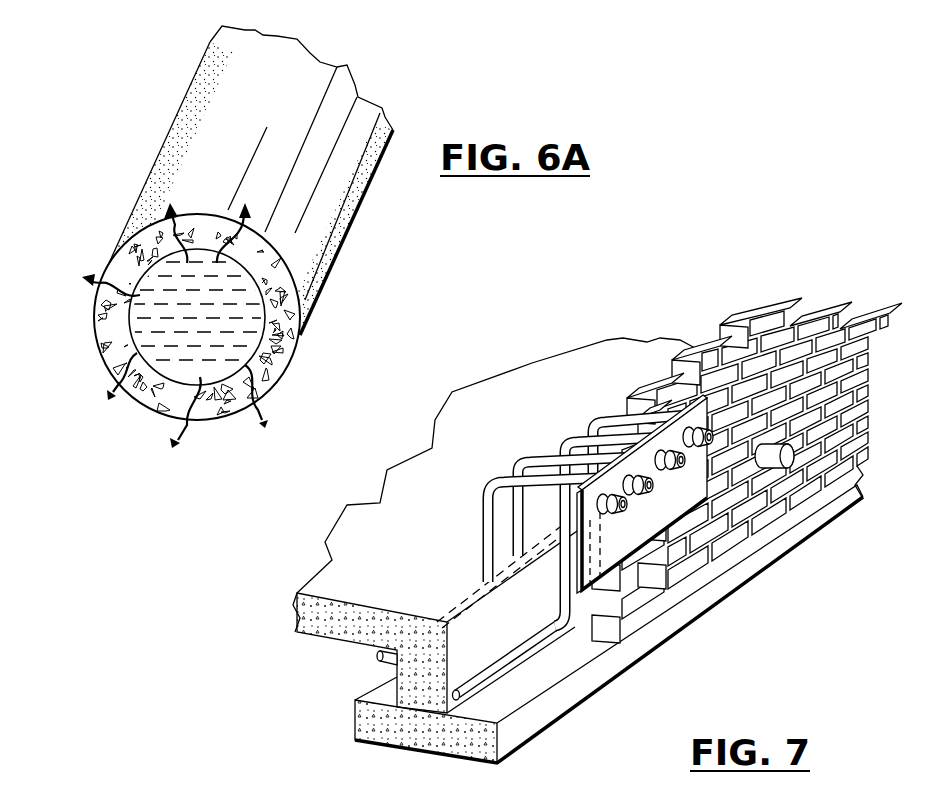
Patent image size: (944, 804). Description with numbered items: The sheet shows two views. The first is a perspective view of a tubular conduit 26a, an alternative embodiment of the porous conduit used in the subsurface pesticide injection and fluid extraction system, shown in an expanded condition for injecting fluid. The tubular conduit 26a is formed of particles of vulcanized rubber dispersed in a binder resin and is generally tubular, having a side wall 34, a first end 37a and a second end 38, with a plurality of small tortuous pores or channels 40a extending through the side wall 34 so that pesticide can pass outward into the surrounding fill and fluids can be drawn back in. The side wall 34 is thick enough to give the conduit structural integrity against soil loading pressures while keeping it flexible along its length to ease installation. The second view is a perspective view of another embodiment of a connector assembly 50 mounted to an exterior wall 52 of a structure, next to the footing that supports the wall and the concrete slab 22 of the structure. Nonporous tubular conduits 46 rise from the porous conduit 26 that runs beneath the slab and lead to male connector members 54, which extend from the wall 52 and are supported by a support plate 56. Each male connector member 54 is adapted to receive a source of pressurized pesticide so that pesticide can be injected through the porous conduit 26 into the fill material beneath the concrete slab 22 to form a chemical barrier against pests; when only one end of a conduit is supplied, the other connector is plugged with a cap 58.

In FIG. 7, the concrete slab 22 is at (362, 548).
In FIG. 7, the porous tubular conduit 26 is at (482, 690).
In FIG. 6A, the tubular conduit 26a is at (158, 152).
In FIG. 6A, the side wall 34 is at (340, 192).
In FIG. 6A, the first end 37a is at (92, 333).
In FIG. 6A, the second end 38 is at (216, 38).
In FIG. 6A, the tortuous pores or channels 40a is at (110, 263).
In FIG. 7, the nonporous tubular conduit 46 is at (497, 477).
In FIG. 7, the connector assembly 50 is at (597, 510).
In FIG. 7, the exterior wall 52 is at (825, 417).
In FIG. 7, the male connector member 54 is at (690, 480).
In FIG. 7, the support plate 56 is at (643, 528).
In FIG. 7, the cap 58 is at (797, 457).